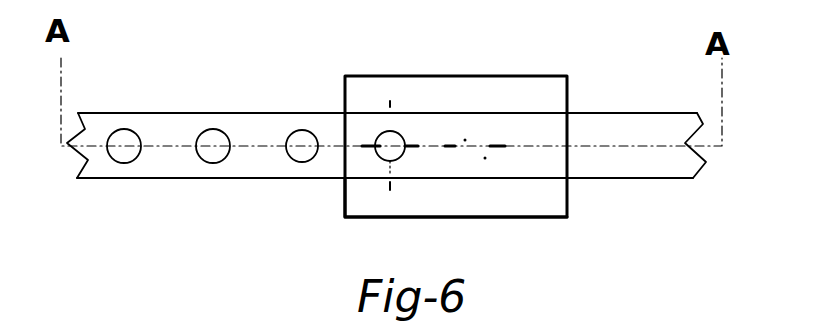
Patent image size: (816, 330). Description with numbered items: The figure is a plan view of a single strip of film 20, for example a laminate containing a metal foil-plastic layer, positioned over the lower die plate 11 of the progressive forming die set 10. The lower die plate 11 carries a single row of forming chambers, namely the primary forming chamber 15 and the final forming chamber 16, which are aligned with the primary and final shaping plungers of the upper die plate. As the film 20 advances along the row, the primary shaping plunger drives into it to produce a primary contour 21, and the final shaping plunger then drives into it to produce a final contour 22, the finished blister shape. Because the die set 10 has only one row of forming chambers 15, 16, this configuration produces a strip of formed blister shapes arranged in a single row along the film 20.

The die set 10 is at (577, 218).
The lower die plate 11 is at (365, 200).
The primary forming chamber 15 is at (483, 138).
The final forming chamber 16 is at (402, 161).
The film 20 is at (268, 118).
The primary contour 21 is at (398, 135).
The final contour 22 is at (292, 159).